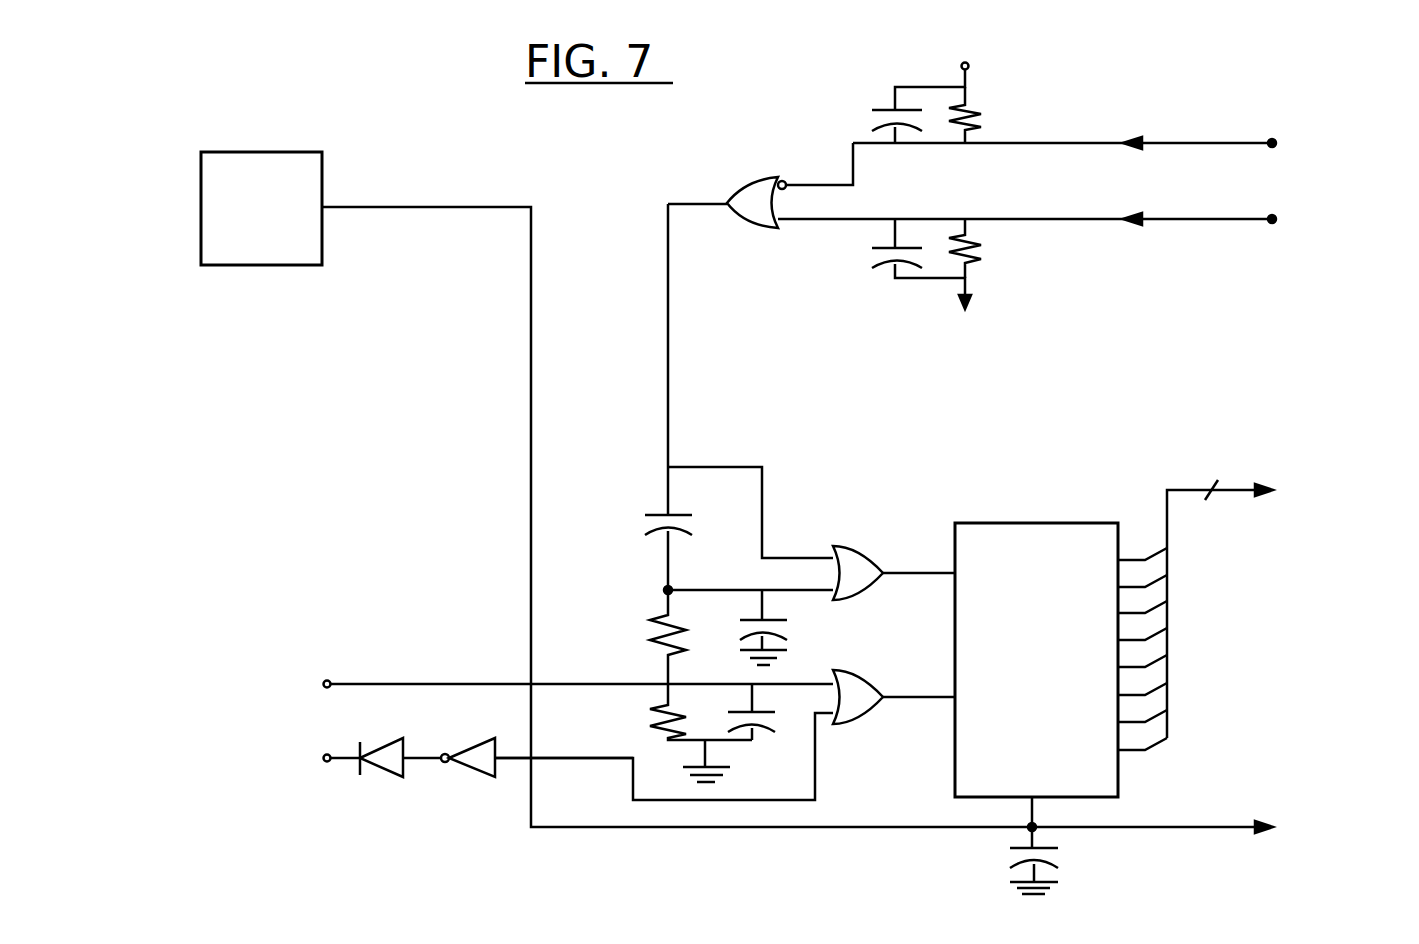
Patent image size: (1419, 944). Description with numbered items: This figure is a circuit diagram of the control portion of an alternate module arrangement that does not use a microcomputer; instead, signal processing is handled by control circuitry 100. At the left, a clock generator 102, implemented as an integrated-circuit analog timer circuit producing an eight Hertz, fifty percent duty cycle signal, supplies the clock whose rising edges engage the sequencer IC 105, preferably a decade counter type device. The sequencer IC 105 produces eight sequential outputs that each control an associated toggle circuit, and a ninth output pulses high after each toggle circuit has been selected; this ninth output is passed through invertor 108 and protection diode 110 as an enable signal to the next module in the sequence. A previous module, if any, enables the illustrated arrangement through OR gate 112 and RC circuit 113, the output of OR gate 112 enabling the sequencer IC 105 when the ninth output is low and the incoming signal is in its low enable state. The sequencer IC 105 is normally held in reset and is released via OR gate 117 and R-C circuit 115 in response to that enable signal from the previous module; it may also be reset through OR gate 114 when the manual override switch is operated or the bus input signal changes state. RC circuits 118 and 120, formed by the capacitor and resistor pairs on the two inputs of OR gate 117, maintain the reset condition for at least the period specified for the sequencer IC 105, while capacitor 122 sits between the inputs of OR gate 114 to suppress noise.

The control circuitry 100 is at (1140, 57).
The clock generator 102 is at (298, 265).
The sequencer IC 105 is at (1012, 522).
The invertor 108 is at (477, 740).
The protection diode 110 is at (378, 740).
The OR gate 112 is at (870, 678).
The RC circuit 113 is at (678, 733).
The OR gate 114 is at (858, 555).
The R-C circuit 115 is at (691, 637).
The OR gate 117 is at (750, 178).
The RC circuit 118 is at (935, 121).
The RC circuit 120 is at (938, 284).
The capacitor 122 is at (643, 520).